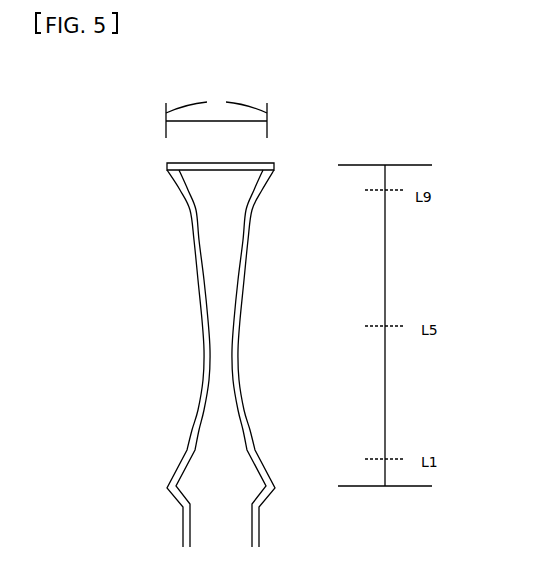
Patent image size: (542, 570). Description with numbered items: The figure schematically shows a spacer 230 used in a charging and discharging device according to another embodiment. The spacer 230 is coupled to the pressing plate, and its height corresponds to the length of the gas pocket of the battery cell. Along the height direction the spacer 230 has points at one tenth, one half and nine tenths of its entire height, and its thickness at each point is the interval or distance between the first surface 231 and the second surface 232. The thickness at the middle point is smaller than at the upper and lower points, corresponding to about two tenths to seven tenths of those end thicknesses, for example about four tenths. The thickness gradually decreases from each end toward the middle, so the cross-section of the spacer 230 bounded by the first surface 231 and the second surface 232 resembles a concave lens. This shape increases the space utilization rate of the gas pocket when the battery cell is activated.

The spacer 230 is at (65, 113).
The first surface 231 is at (193, 425).
The second surface 232 is at (248, 407).